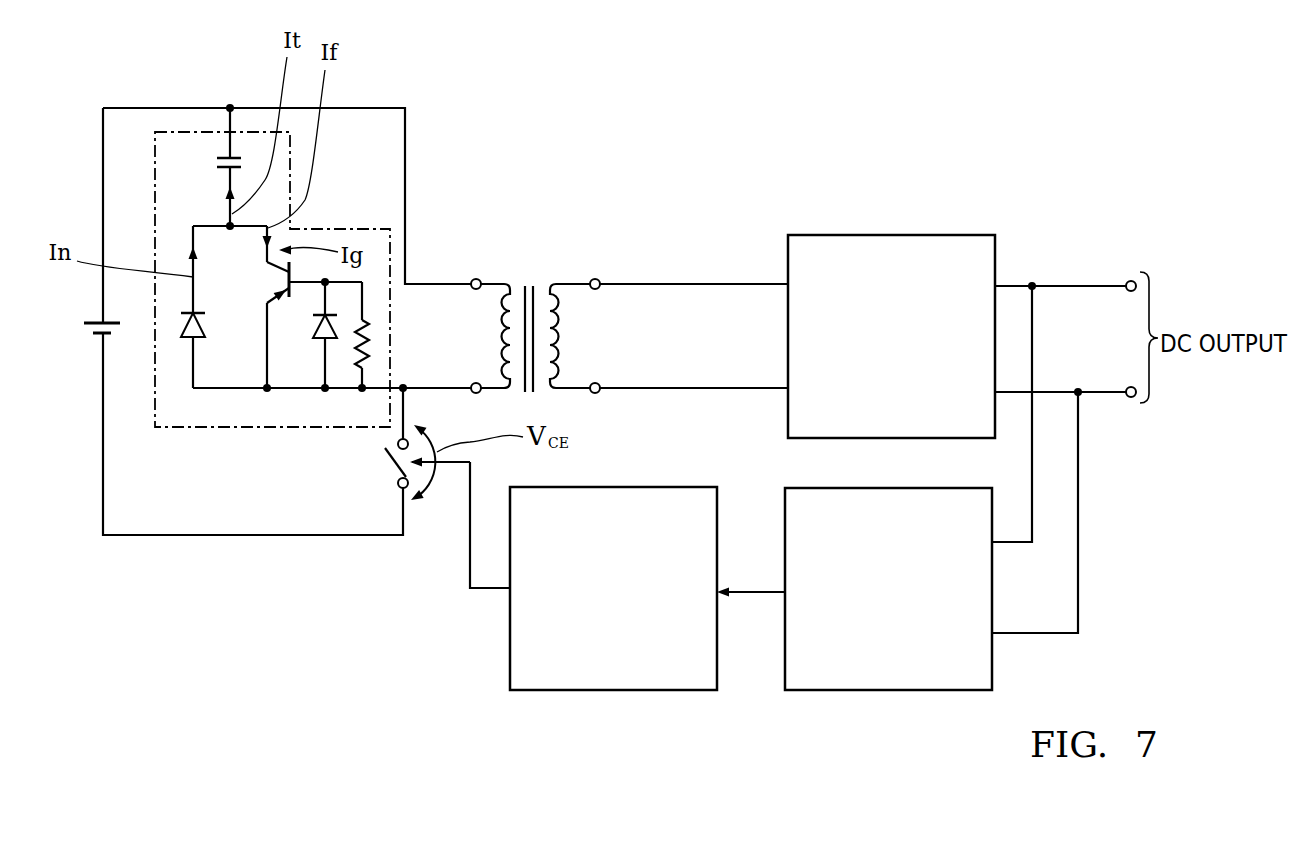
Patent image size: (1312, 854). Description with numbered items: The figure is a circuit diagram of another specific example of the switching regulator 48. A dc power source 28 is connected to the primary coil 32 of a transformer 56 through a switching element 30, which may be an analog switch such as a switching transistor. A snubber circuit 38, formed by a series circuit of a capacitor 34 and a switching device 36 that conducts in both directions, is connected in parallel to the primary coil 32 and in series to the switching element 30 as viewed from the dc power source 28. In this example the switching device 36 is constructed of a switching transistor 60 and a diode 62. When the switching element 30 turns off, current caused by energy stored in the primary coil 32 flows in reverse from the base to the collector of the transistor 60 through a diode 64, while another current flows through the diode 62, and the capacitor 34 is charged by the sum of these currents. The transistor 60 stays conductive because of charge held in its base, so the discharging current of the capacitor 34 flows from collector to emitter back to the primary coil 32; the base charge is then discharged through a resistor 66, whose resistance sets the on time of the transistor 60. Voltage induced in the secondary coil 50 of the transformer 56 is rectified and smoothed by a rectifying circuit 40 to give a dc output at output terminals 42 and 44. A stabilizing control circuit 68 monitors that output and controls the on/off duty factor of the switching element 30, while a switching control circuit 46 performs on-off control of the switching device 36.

The dc power source 28 is at (93, 333).
The switching element 30 is at (392, 462).
The primary coil 32 is at (490, 284).
The capacitor 34 is at (223, 155).
The switching device 36 is at (270, 396).
The snubber circuit 38 is at (242, 132).
The rectifying circuit 40 is at (977, 235).
The output terminal 42 is at (1130, 281).
The output terminal 44 is at (1128, 397).
The switching control circuit 46 is at (629, 690).
The switching regulator 48 is at (828, 174).
The secondary coil 50 is at (563, 284).
The transformer 56 is at (528, 266).
The switching transistor 60 is at (291, 300).
The diode 62 is at (205, 340).
The diode 64 is at (336, 401).
The resistor 66 is at (368, 347).
The stabilizing control circuit 68 is at (882, 690).